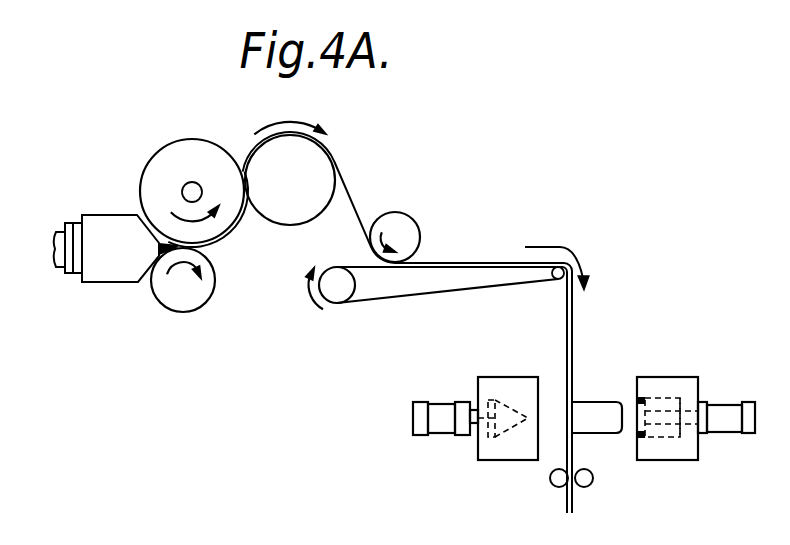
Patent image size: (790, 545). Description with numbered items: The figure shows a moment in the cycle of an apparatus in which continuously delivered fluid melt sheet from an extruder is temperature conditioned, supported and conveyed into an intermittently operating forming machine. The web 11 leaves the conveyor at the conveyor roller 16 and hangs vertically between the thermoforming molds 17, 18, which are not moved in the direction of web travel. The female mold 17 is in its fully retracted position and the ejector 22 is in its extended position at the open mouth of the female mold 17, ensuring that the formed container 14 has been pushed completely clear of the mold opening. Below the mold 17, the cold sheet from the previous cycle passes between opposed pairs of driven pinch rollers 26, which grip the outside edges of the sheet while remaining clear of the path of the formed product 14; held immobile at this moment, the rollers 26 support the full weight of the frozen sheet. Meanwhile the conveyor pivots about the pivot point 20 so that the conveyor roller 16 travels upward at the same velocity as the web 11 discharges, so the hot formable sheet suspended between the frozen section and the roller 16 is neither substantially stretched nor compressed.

The web 11 is at (580, 320).
The formed container 14 is at (600, 404).
The conveyor roller 16 is at (556, 280).
The female mold 17 is at (657, 452).
The thermoforming mold 18 is at (498, 452).
The pivot point 20 is at (393, 264).
The ejector 22 is at (645, 405).
The driven pinch rollers 26 is at (557, 488).